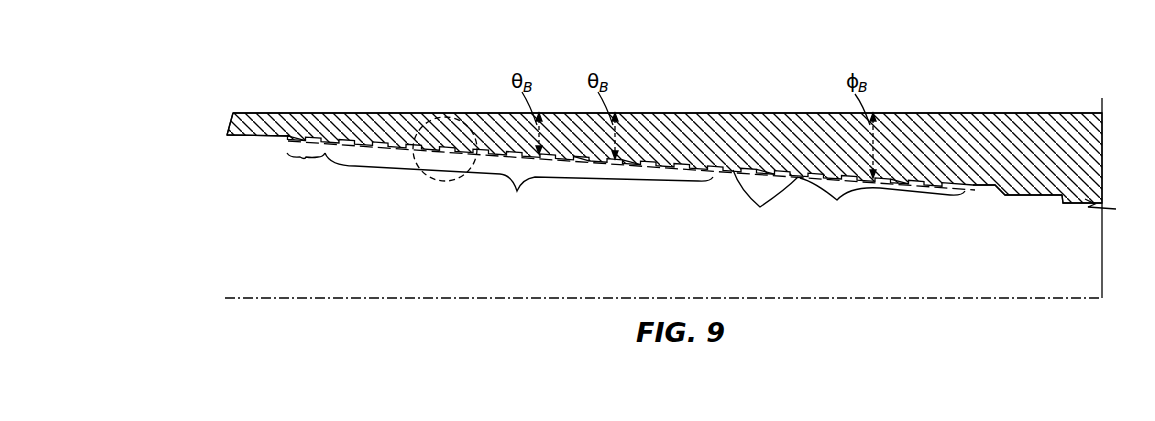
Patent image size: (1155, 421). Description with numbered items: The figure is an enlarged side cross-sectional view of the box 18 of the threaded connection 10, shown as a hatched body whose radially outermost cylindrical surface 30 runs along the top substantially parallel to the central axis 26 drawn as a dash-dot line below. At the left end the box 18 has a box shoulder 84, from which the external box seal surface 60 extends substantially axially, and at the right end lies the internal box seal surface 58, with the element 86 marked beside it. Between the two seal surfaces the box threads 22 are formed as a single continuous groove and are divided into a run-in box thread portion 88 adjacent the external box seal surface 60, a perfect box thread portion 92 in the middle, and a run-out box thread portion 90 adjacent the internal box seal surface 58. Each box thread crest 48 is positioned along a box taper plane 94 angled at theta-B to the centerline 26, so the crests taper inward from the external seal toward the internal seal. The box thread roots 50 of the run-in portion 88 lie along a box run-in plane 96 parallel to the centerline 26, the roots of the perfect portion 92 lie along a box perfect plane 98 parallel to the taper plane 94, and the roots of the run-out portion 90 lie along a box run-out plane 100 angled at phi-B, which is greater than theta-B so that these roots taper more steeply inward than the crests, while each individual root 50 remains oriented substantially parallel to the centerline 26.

The box 18 is at (1092, 75).
The box shoulder 84 is at (231, 122).
The external box seal surface 60 is at (259, 139).
The run-in box thread portion 88 is at (306, 169).
The box run-in plane 96 is at (300, 135).
The radially outermost cylindrical surface 30 is at (385, 113).
The connection 10 is at (456, 118).
The box taper plane 94 is at (585, 158).
The box perfect plane 98 is at (631, 158).
The box thread root 50 is at (713, 162).
The box threads 22 is at (765, 168).
The box run-out plane 100 is at (897, 168).
The internal box seal surface 58 is at (1030, 198).
The trailing edge 86 is at (1061, 198).
The central axis 26 is at (649, 298).
The perfect box thread portion 92 is at (519, 185).
The box thread crest 48 is at (765, 204).
The run-out box thread portion 90 is at (882, 205).